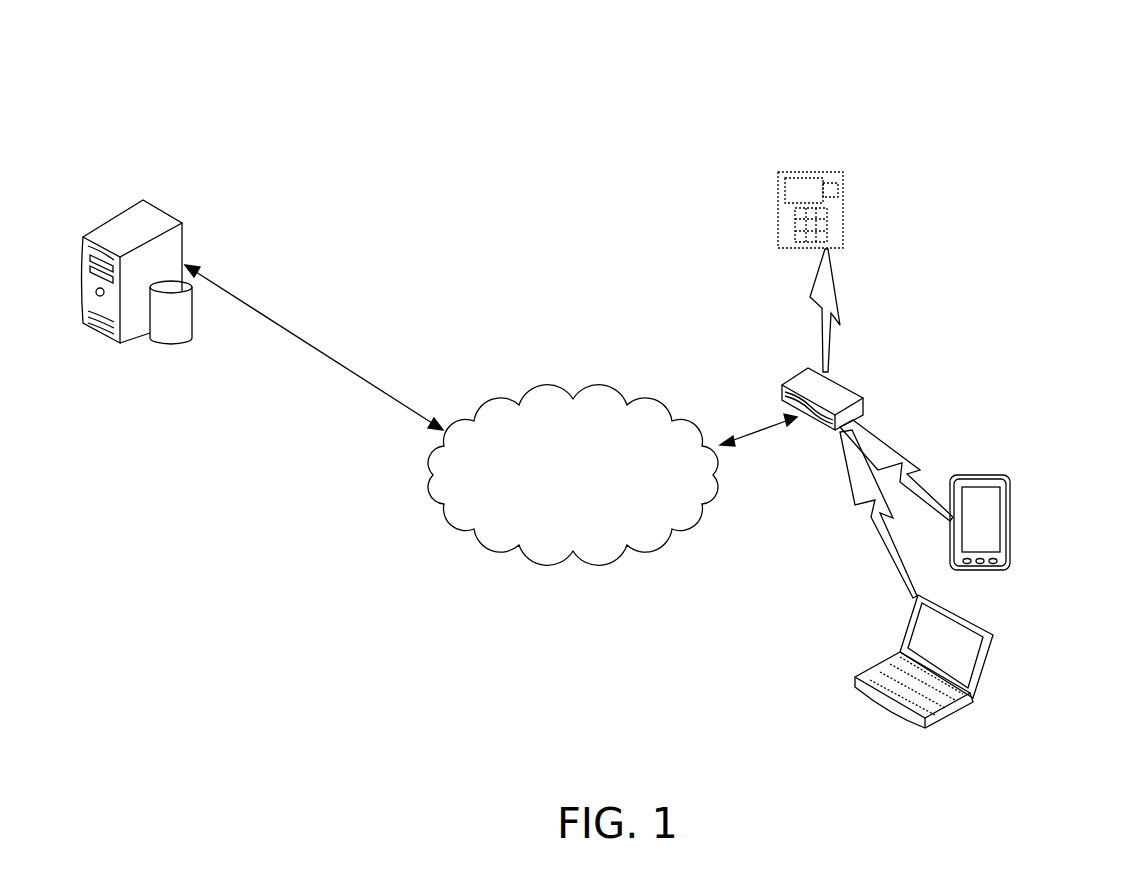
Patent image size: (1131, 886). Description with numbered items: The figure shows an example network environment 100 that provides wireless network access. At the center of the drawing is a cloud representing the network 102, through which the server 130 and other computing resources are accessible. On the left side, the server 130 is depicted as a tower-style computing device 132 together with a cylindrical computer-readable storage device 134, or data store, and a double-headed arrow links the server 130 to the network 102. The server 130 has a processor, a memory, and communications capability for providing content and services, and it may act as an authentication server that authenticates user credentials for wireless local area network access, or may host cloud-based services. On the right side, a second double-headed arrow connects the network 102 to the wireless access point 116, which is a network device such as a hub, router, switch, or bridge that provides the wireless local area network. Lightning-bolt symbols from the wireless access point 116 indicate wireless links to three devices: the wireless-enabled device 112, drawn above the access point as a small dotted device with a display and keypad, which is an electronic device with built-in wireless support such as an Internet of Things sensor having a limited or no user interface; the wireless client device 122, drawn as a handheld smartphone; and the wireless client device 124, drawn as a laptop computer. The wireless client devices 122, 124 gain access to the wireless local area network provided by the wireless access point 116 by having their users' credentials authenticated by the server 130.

The network environment 100 is at (518, 45).
The network 102 is at (528, 397).
The wireless-enabled device 112 is at (827, 170).
The wireless access point 116 is at (828, 428).
The wireless client device 122 is at (1010, 542).
The wireless client device 124 is at (957, 617).
The server 130 is at (135, 350).
The computing device 132 is at (167, 215).
The computer-readable storage device 134 is at (193, 340).